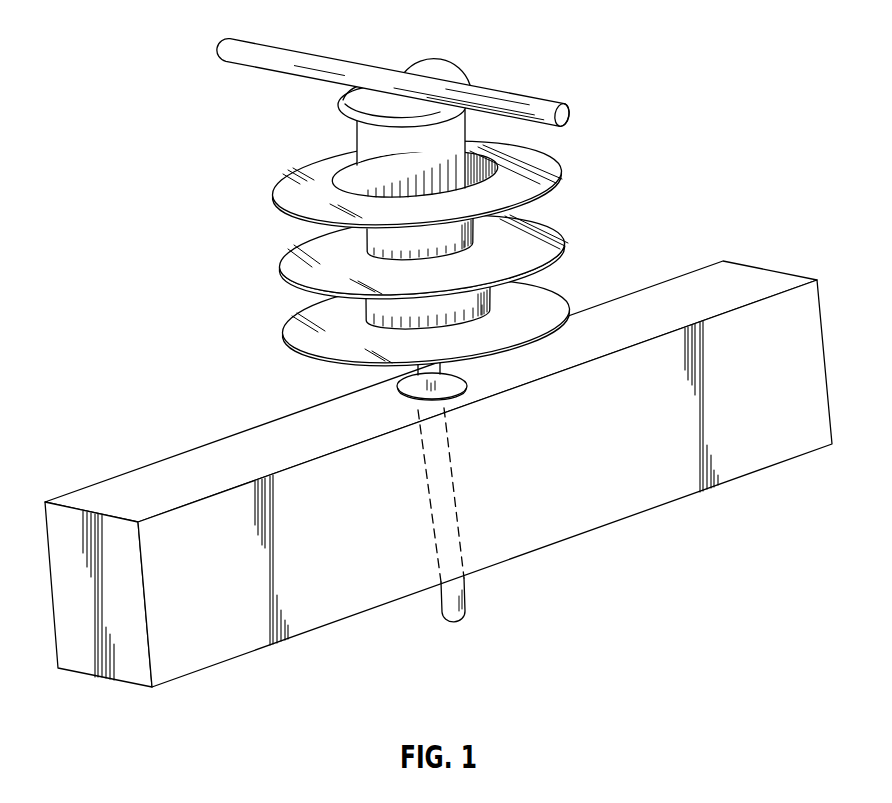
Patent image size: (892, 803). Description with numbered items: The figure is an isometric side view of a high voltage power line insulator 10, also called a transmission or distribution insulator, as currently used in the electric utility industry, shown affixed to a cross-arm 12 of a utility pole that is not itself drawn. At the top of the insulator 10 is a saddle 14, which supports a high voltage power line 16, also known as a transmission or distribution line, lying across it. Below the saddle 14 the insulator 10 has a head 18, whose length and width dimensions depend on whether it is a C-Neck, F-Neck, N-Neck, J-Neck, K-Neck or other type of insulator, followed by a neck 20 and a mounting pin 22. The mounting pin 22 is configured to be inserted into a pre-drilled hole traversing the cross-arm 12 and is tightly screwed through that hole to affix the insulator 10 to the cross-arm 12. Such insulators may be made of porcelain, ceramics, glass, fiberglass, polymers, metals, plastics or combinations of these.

The high voltage power line insulator 10 is at (385, 187).
The cross-arm 12 is at (356, 616).
The saddle 14 is at (437, 67).
The high voltage power line 16 is at (481, 88).
The head 18 is at (363, 98).
The neck 20 is at (563, 180).
The mounting pin 22 is at (412, 390).